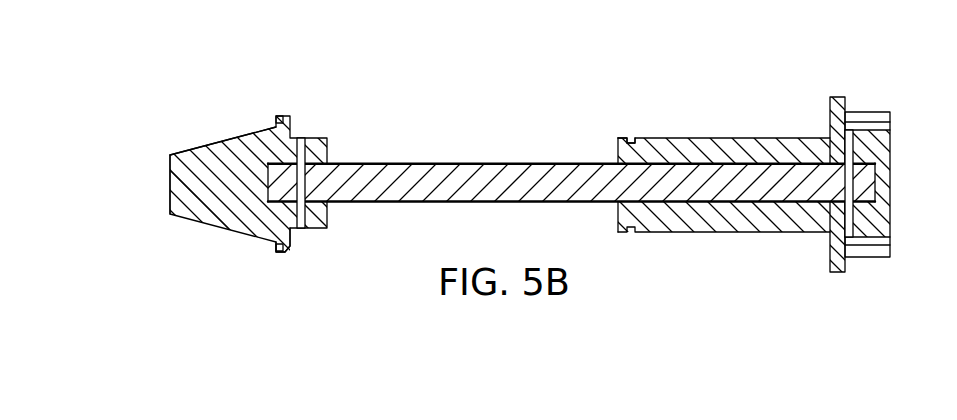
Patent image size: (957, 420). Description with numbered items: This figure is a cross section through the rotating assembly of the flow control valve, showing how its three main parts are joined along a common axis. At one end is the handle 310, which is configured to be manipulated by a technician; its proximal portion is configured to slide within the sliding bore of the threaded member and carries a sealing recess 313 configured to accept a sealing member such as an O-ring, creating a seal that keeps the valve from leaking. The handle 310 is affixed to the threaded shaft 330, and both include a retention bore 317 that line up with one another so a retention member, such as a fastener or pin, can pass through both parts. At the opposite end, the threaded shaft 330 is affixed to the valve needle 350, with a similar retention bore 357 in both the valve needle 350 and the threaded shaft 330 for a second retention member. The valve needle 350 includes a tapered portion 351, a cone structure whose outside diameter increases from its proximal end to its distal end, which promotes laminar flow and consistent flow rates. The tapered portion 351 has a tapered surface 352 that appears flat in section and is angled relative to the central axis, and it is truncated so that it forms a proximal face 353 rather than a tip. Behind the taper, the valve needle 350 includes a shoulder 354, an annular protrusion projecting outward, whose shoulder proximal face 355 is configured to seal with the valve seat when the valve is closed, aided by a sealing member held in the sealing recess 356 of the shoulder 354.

The handle 310 is at (782, 268).
The sealing recess 313 is at (629, 138).
The retention bore 317 is at (848, 140).
The threaded shaft 330 is at (460, 176).
The valve needle 350 is at (211, 118).
The tapered portion 351 is at (205, 204).
The tapered surface 352 is at (203, 148).
The proximal face 353 is at (170, 184).
The shoulder 354 is at (290, 248).
The shoulder proximal face 355 is at (275, 246).
The sealing recess 356 is at (277, 120).
The retention bore 357 is at (302, 143).